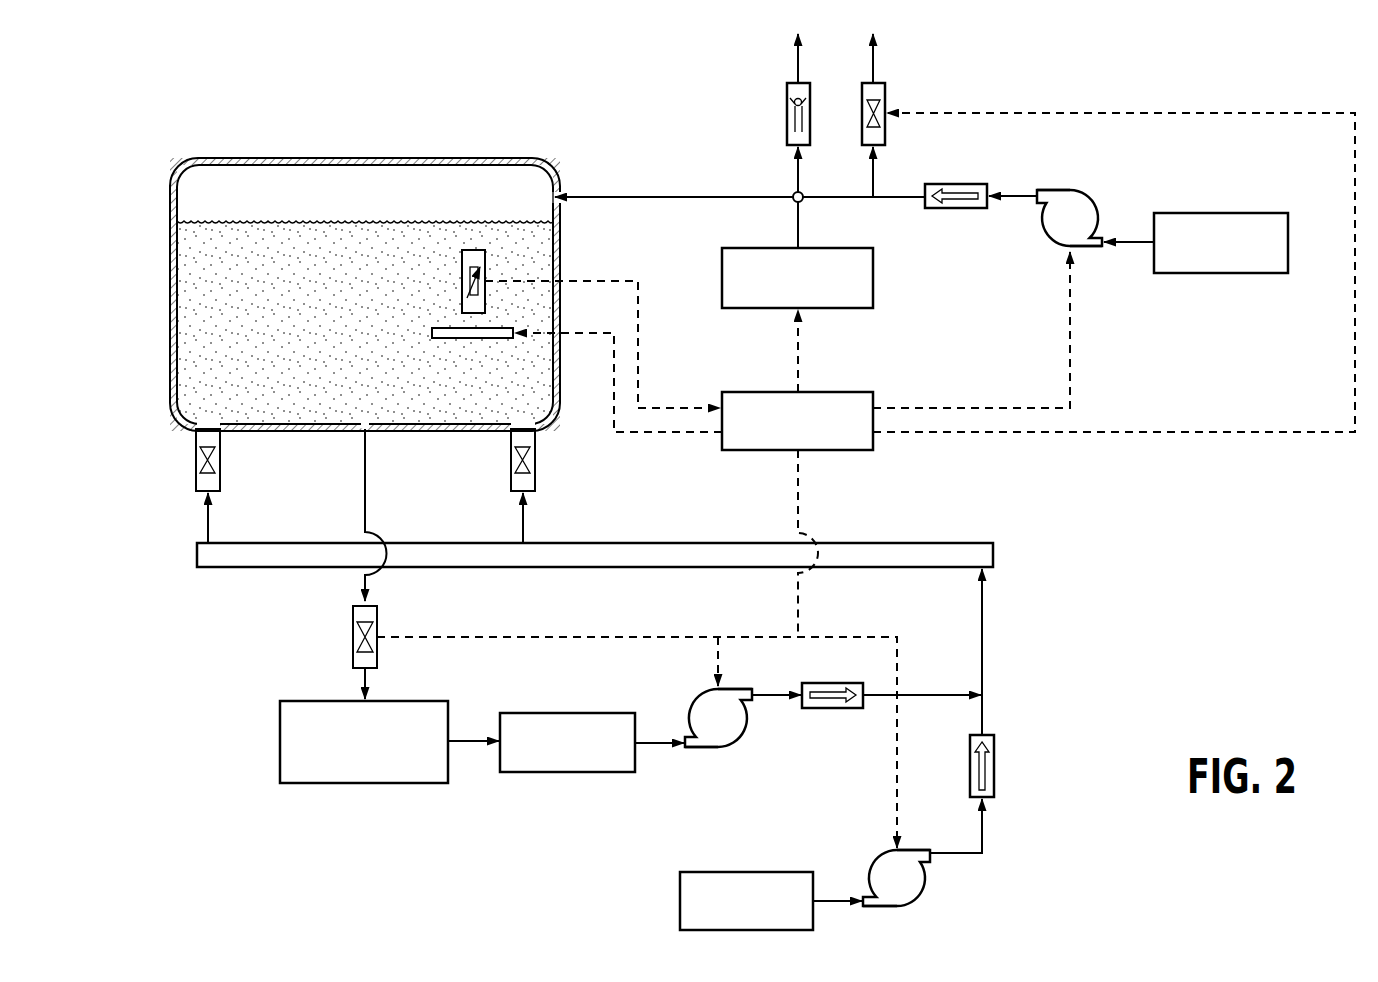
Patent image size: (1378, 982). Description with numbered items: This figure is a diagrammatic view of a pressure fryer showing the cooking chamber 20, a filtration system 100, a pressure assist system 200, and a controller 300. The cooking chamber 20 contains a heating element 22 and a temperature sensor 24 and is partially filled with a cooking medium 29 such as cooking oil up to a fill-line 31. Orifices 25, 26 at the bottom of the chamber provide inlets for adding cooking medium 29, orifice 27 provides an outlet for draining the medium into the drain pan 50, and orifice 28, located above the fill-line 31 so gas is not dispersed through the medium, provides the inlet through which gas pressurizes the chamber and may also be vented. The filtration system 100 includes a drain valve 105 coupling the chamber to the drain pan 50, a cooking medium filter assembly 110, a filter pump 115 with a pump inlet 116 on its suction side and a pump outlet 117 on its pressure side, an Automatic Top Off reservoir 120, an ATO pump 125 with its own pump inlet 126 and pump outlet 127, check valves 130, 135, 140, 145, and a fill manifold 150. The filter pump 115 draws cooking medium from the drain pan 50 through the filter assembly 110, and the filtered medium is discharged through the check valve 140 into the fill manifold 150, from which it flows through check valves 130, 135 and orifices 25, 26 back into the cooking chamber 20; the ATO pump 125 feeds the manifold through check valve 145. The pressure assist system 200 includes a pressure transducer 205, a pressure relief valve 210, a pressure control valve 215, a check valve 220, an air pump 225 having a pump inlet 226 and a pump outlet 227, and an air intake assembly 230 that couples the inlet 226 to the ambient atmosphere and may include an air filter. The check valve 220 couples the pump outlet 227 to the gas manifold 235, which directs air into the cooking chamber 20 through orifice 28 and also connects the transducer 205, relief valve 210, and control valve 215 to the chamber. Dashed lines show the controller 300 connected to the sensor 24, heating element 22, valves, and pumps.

The cooking chamber 20 is at (213, 156).
The heating element 22 is at (450, 338).
The temperature sensor 24 is at (462, 281).
The orifice 25 is at (208, 430).
The orifice 26 is at (523, 430).
The orifice 27 is at (365, 430).
The orifice 28 is at (552, 197).
The cooking medium 29 is at (365, 323).
The fill-line 31 is at (170, 219).
The drain pan 50 is at (280, 720).
The filtration system 100 is at (1037, 550).
The drain valve 105 is at (353, 637).
The cooking medium filter assembly 110 is at (520, 713).
The filter pump 115 is at (690, 712).
The pump inlet 116 is at (684, 749).
The pump outlet 117 is at (754, 689).
The Automatic Top Off reservoir 120 is at (703, 872).
The ATO pump 125 is at (870, 870).
The pump inlet 126 is at (865, 908).
The pump outlet 127 is at (935, 850).
The check valve 130 is at (196, 460).
The check valve 135 is at (511, 460).
The check valve 140 is at (815, 708).
The check valve 145 is at (994, 762).
The fill manifold 150 is at (202, 568).
The pressure assist system 200 is at (1295, 82).
The pressure transducer 205 is at (850, 248).
The pressure relief valve 210 is at (787, 103).
The pressure control valve 215 is at (885, 105).
The check valve 220 is at (970, 208).
The air pump 225 is at (1093, 203).
The pump inlet 226 is at (1100, 247).
The pump outlet 227 is at (1037, 190).
The air intake assembly 230 is at (1270, 213).
The gas manifold 235 is at (604, 197).
The controller 300 is at (850, 392).